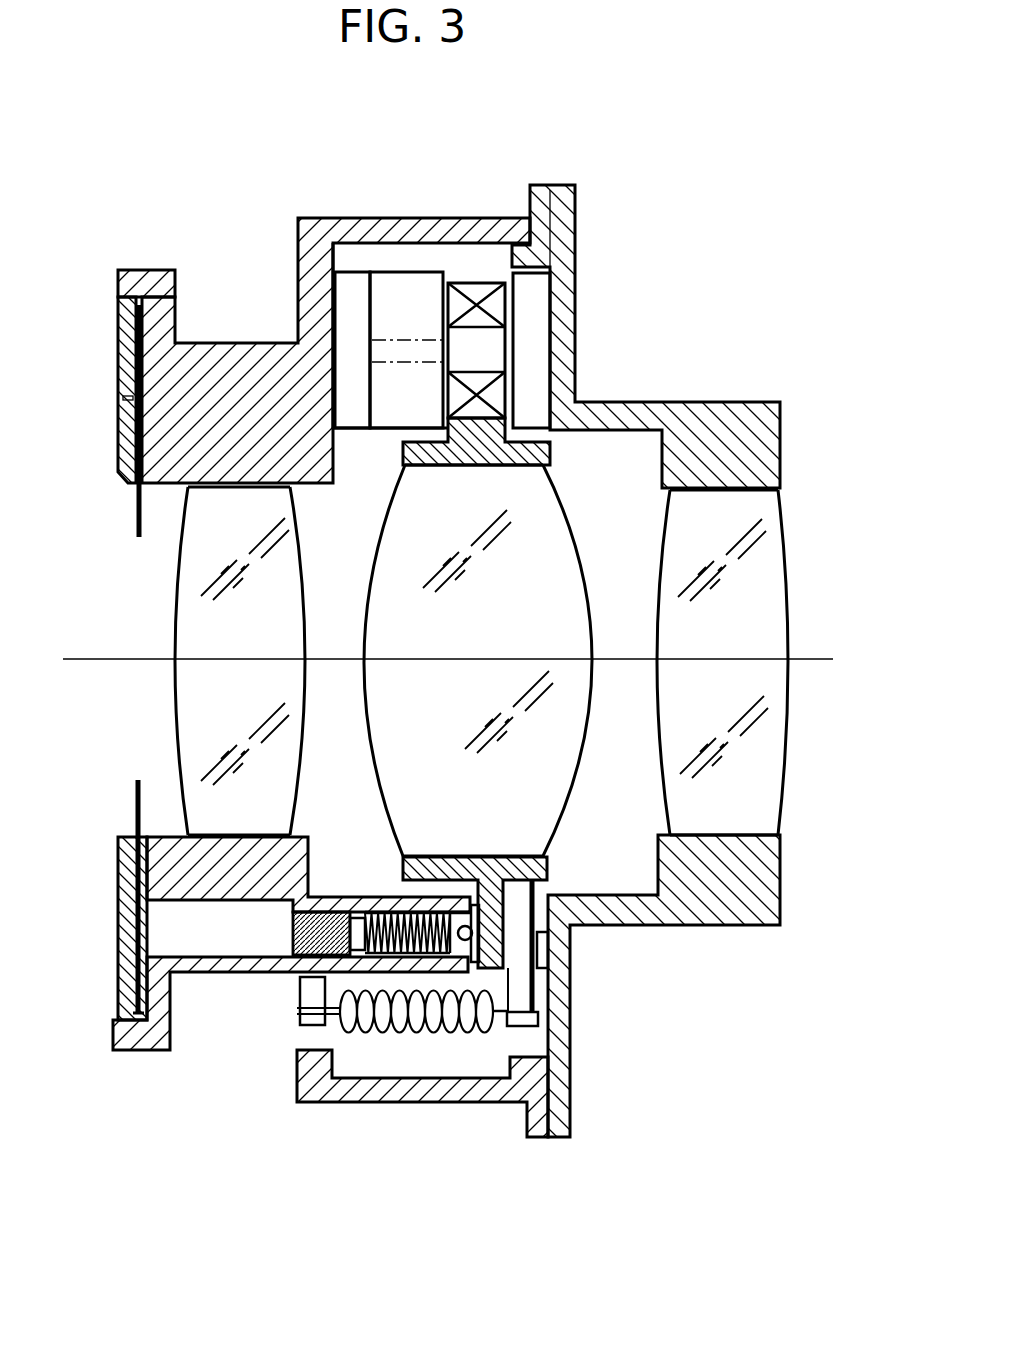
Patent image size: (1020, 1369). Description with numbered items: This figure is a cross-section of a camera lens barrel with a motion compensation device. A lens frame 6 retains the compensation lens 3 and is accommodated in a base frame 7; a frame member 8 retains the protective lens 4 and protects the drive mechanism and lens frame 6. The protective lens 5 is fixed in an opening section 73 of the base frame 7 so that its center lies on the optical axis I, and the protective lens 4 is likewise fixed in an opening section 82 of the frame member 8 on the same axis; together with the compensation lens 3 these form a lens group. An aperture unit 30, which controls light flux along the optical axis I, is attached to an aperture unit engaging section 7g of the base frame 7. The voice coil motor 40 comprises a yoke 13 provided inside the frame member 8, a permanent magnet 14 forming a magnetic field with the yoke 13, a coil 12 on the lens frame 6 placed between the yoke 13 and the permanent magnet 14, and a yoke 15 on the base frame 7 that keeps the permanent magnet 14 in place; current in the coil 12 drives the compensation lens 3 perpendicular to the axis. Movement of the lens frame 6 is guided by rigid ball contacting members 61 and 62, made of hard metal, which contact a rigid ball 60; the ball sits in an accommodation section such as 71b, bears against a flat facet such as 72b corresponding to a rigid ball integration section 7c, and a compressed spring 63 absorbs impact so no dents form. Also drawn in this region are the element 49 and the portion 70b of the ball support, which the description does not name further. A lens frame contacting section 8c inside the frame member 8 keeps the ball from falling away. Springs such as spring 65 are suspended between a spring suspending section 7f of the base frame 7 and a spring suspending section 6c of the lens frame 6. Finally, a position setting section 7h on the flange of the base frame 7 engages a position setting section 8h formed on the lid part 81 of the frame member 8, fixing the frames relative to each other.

The compensation lens 3 is at (545, 505).
The protective lens 4 is at (768, 765).
The protective lens 5 is at (192, 612).
The lens frame 6 is at (533, 452).
The spring suspending section 6c is at (517, 987).
The base frame 7 is at (312, 228).
The rigid ball integration section 7c is at (300, 1010).
The spring suspending section 7f is at (300, 988).
The aperture unit engaging section 7g is at (141, 270).
The position setting section 7h is at (537, 1100).
The frame member 8 is at (763, 432).
The lens frame contacting section 8c is at (527, 957).
The position setting section 8h is at (522, 256).
The coil 12 is at (481, 295).
The yoke 13 is at (530, 305).
The permanent magnet 14 is at (403, 295).
The yoke 15 is at (353, 295).
The aperture unit 30 is at (133, 375).
The voice coil motor 40 is at (430, 262).
The feed screw 49 is at (293, 935).
The rigid ball 60 is at (442, 958).
The rigid ball contacting member 61 is at (468, 947).
The rigid ball contacting member 62 is at (392, 958).
The compressed spring 63 is at (357, 958).
The spring 65 is at (340, 1030).
The spring receiving portion 70b is at (380, 900).
The rigid ball accommodation section 71b is at (460, 910).
The facet 72b is at (490, 920).
The opening section 73 is at (167, 487).
The lid part 81 is at (577, 230).
The opening section 82 is at (760, 493).
The optical axis I is at (813, 660).